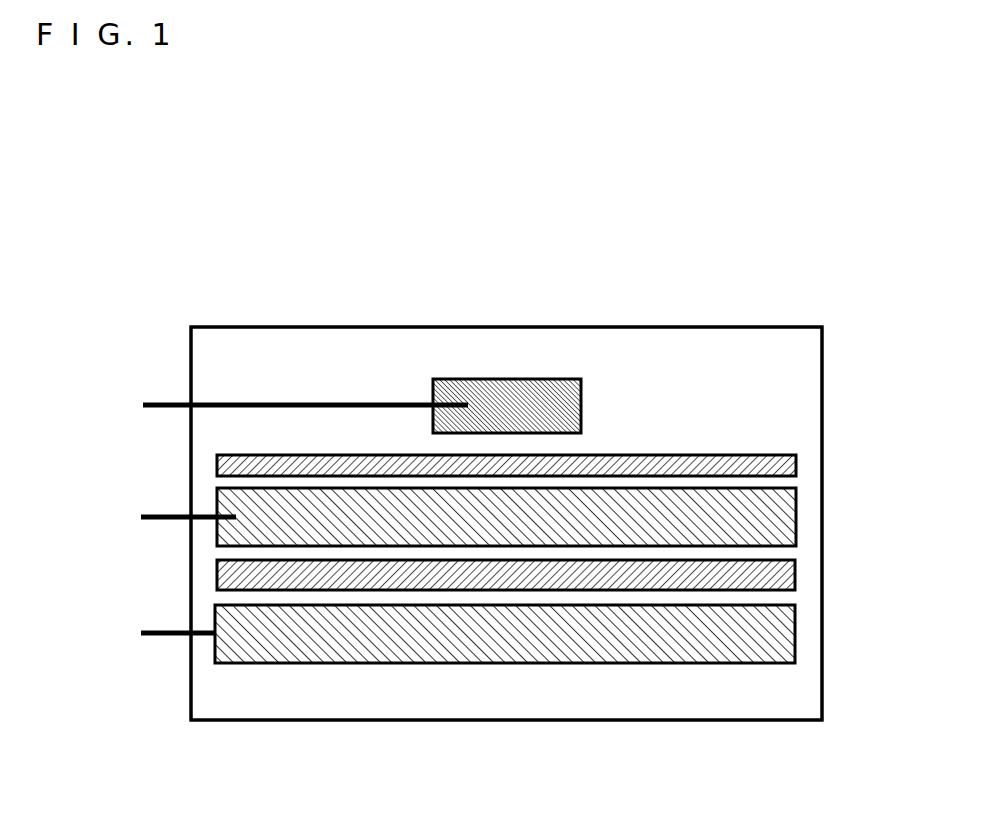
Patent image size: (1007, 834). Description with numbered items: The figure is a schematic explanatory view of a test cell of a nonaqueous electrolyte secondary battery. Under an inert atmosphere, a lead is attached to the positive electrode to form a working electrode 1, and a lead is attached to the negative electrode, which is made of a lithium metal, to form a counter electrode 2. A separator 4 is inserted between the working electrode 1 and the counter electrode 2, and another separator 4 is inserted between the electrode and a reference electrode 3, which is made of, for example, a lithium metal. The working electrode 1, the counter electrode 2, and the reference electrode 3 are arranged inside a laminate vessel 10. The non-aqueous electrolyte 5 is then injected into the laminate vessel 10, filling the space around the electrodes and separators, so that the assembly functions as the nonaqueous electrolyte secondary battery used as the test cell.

The working electrode 1 is at (785, 521).
The counter electrode 2 is at (780, 633).
The reference electrode 3 is at (512, 402).
The separator 4 is at (796, 468).
The non-aqueous electrolyte 5 is at (706, 372).
The laminate vessel 10 is at (237, 327).